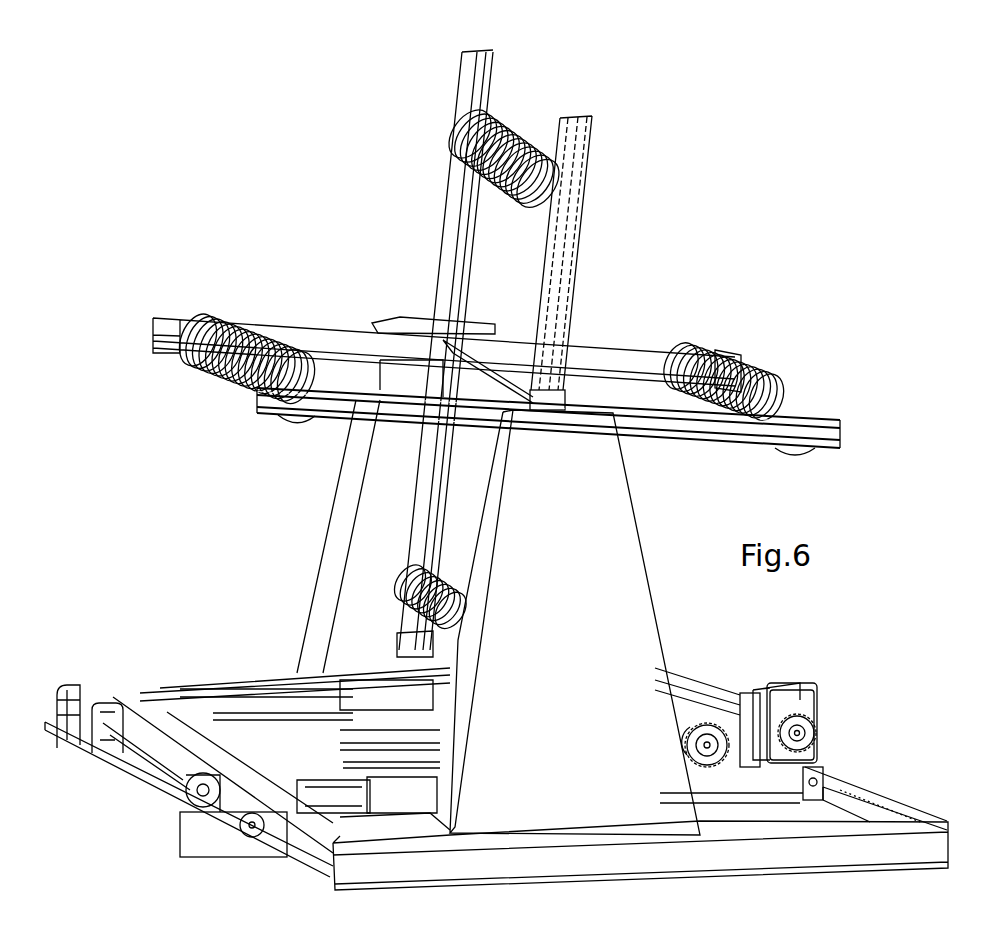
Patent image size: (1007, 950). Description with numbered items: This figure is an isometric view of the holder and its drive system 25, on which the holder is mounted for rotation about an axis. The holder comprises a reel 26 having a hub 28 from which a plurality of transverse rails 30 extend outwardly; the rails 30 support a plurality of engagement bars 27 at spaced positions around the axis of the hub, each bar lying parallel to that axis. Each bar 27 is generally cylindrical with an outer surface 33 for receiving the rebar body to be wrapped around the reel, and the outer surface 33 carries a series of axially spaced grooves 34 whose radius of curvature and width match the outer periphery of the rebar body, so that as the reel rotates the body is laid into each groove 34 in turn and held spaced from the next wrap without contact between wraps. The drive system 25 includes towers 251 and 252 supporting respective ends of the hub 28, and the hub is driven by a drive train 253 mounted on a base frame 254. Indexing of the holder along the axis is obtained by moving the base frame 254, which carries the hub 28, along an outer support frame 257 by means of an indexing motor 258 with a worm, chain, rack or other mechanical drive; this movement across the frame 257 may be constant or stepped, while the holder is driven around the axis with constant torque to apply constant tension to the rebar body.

The drive system 25 is at (820, 655).
The reel 26 is at (602, 294).
The bars 27 is at (208, 318).
The hub 28 is at (450, 345).
The transverse rails 30 is at (452, 214).
The outer surface 33 is at (742, 358).
The grooves 34 is at (764, 400).
The tower 251 is at (332, 516).
The tower 252 is at (620, 515).
The drive train 253 is at (709, 724).
The base frame 254 is at (787, 772).
The outer support frame 257 is at (860, 757).
The indexing motor 258 is at (777, 690).